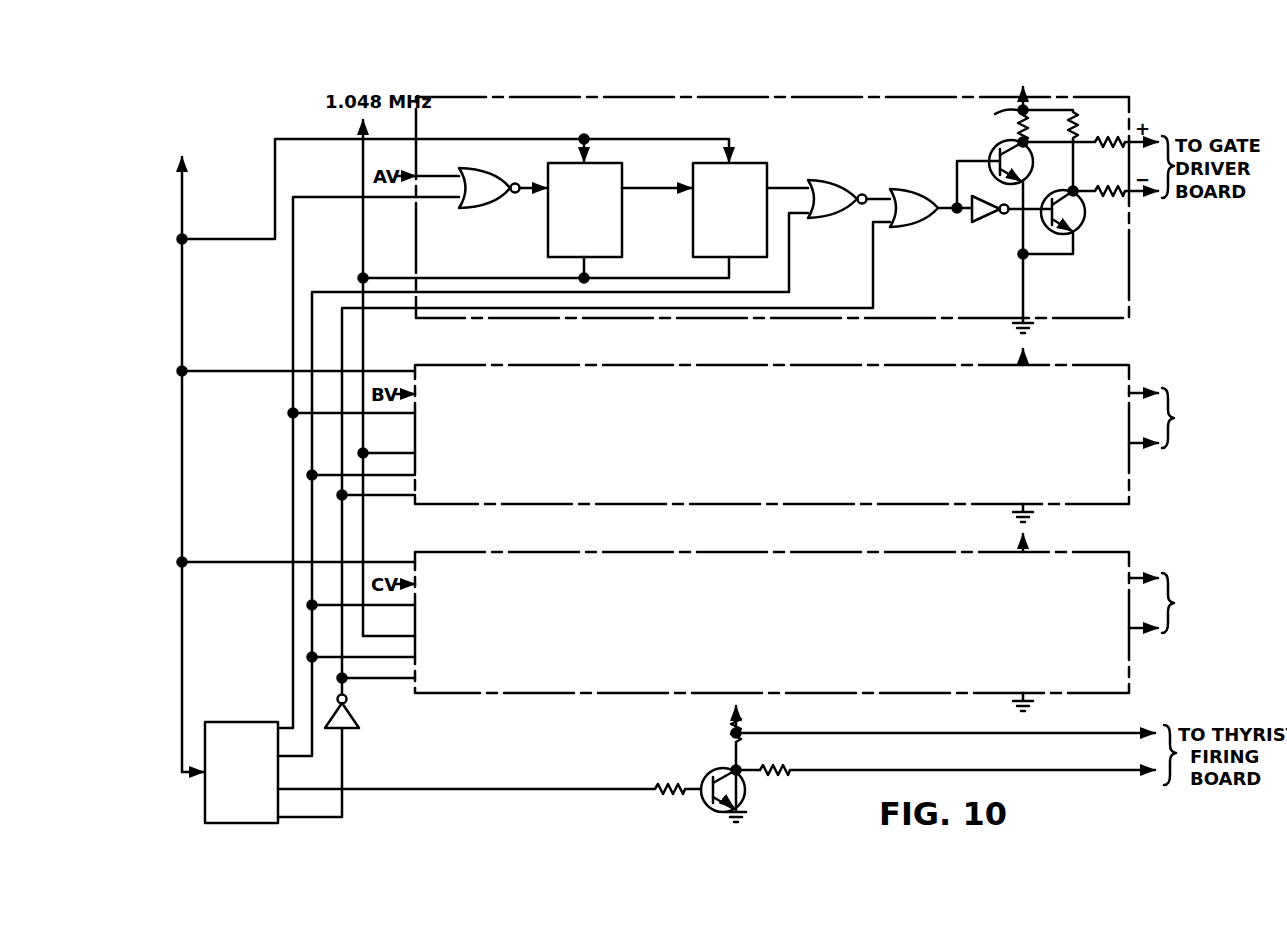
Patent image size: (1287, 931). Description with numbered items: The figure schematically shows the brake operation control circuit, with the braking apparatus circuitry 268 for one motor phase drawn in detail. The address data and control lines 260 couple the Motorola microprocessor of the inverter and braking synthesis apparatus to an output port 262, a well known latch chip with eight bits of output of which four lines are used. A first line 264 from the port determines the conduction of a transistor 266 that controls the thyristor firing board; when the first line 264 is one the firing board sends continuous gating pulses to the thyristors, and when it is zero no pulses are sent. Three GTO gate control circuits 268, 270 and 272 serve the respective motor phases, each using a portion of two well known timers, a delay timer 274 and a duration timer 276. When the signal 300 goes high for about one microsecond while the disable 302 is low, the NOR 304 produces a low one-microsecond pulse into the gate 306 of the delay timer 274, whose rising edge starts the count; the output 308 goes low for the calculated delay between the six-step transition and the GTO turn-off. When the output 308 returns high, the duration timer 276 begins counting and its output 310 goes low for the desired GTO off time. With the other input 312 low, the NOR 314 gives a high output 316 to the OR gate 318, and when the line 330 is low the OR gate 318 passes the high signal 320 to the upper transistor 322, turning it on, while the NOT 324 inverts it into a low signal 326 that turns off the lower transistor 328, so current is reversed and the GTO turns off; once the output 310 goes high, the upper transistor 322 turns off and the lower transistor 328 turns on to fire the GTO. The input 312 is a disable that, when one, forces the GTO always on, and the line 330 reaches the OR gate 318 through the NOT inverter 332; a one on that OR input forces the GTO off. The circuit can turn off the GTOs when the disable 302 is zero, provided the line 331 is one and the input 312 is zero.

The address data and control lines 260 is at (182, 290).
The output port 262 is at (240, 721).
The first line 264 is at (620, 788).
The transistor 266 is at (704, 806).
The GTO gate control circuit 268 is at (1130, 296).
The GTO gate control circuit 270 is at (1130, 480).
The GTO gate control circuit 272 is at (1130, 666).
The delay timer 274 is at (562, 162).
The duration timer 276 is at (757, 162).
The signal 300 is at (427, 176).
The disable 302 is at (326, 195).
The NOR 304 is at (470, 167).
The gate 306 is at (528, 190).
The output 308 is at (641, 190).
The output 310 is at (808, 182).
The input 312 is at (341, 290).
The NOR 314 is at (840, 218).
The output 316 is at (866, 196).
The OR gate 318 is at (930, 228).
The high signal 320 is at (958, 221).
The upper transistor 322 is at (990, 148).
The NOT 324 is at (988, 197).
The low signal 326 is at (1012, 212).
The lower transistor 328 is at (1085, 222).
The line 330 is at (344, 336).
The line 331 is at (342, 815).
The NOT inverter 332 is at (350, 728).